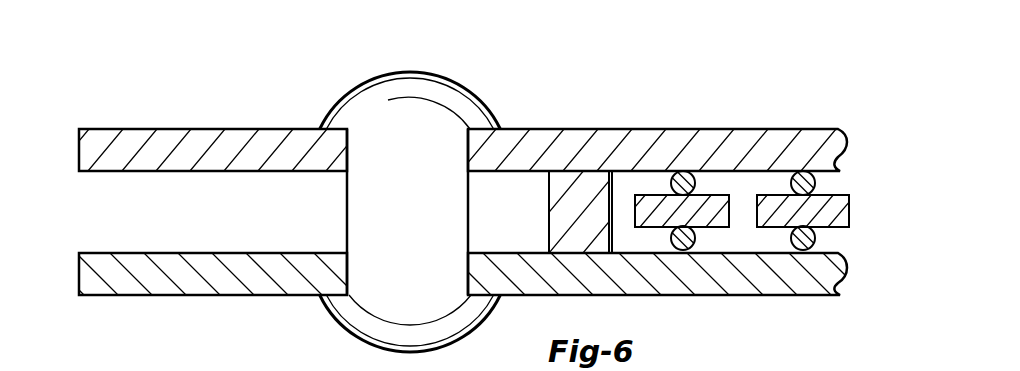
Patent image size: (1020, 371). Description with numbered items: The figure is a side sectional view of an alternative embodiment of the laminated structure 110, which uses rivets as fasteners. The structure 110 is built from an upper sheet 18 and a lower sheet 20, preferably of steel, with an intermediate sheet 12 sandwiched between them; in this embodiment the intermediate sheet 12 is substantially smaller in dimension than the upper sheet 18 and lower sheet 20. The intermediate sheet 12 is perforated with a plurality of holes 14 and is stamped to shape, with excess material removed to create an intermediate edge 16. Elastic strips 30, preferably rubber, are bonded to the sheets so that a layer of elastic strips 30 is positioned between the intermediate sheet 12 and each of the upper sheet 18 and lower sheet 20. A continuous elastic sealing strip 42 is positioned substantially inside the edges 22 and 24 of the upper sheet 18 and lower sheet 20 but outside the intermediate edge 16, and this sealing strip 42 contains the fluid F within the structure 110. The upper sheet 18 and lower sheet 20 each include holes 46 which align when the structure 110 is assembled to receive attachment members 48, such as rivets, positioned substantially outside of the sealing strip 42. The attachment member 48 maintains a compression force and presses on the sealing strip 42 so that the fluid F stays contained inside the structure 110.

The structure 110 is at (500, 85).
The edge of upper sheet 22 is at (78, 150).
The edge of lower sheet 24 is at (78, 275).
The upper sheet 18 is at (533, 150).
The lower sheet 20 is at (765, 282).
The attachment member 48 is at (365, 100).
The holes 46 is at (347, 149).
The sealing strip 42 is at (570, 235).
The fluid F is at (622, 208).
The intermediate edge 16 is at (637, 222).
The holes 14 is at (742, 195).
The intermediate sheet 12 is at (833, 212).
The elastic strips 30 is at (678, 177).